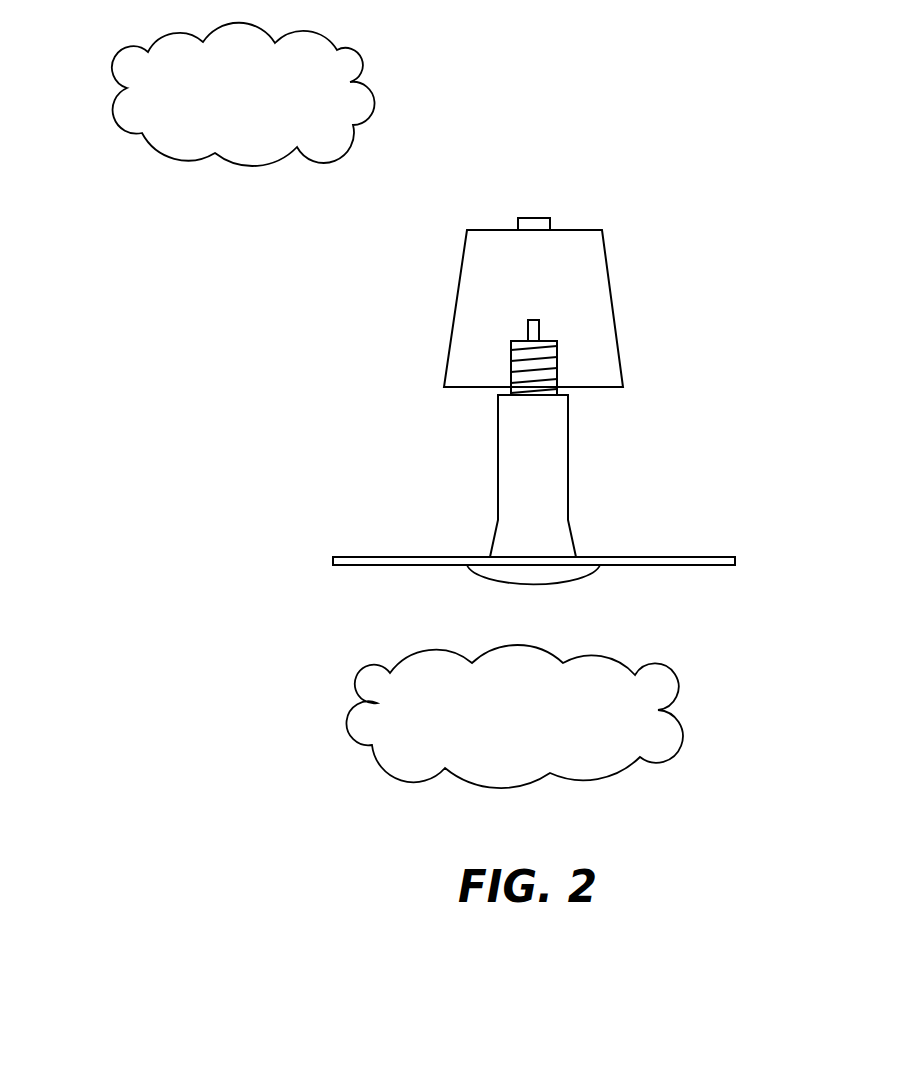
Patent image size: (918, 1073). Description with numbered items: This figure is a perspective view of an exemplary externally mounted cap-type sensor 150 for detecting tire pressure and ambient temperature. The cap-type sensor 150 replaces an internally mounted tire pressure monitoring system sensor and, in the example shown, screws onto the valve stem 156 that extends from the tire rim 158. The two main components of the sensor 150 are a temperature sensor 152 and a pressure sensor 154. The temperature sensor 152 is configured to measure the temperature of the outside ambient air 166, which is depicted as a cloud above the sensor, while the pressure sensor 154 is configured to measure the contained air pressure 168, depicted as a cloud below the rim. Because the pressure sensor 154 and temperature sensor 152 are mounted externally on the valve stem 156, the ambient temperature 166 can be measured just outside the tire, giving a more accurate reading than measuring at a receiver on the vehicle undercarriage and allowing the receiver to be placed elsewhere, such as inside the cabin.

The externally mounted cap-type sensor 150 is at (612, 295).
The temperature sensor 152 is at (533, 218).
The pressure sensor 154 is at (530, 319).
The valve stem 156 is at (570, 463).
The tire rim 158 is at (350, 557).
The outside ambient air 166 is at (310, 50).
The contained air pressure 168 is at (650, 688).